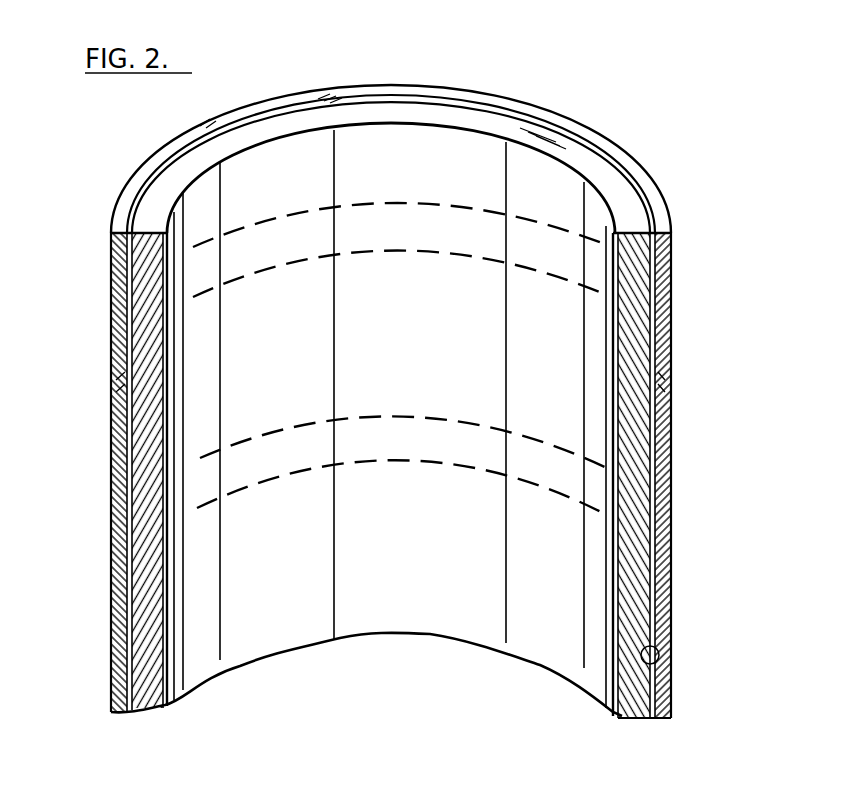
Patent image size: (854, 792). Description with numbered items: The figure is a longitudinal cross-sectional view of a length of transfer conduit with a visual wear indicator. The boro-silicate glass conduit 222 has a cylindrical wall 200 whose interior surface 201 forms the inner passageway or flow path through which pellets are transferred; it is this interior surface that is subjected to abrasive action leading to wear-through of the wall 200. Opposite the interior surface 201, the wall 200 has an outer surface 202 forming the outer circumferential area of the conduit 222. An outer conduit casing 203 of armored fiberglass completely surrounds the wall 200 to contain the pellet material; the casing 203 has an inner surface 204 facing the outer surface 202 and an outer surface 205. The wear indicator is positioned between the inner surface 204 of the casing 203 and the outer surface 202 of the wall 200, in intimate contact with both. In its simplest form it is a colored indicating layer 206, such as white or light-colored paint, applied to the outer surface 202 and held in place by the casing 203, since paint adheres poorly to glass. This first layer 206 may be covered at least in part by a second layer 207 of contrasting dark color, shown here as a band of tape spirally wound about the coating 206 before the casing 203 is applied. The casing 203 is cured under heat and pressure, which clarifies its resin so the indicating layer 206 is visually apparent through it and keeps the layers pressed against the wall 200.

The cylindrical wall 200 is at (627, 717).
The interior surface 201 is at (242, 657).
The outer surface 202 is at (613, 167).
The outer conduit casing 203 is at (670, 460).
The inner surface 204 is at (656, 657).
The outer surface 205 is at (670, 487).
The colored indicating layer 206 is at (670, 694).
The second layer 207 is at (112, 400).
The boro-silicate glass conduit 222 is at (84, 373).